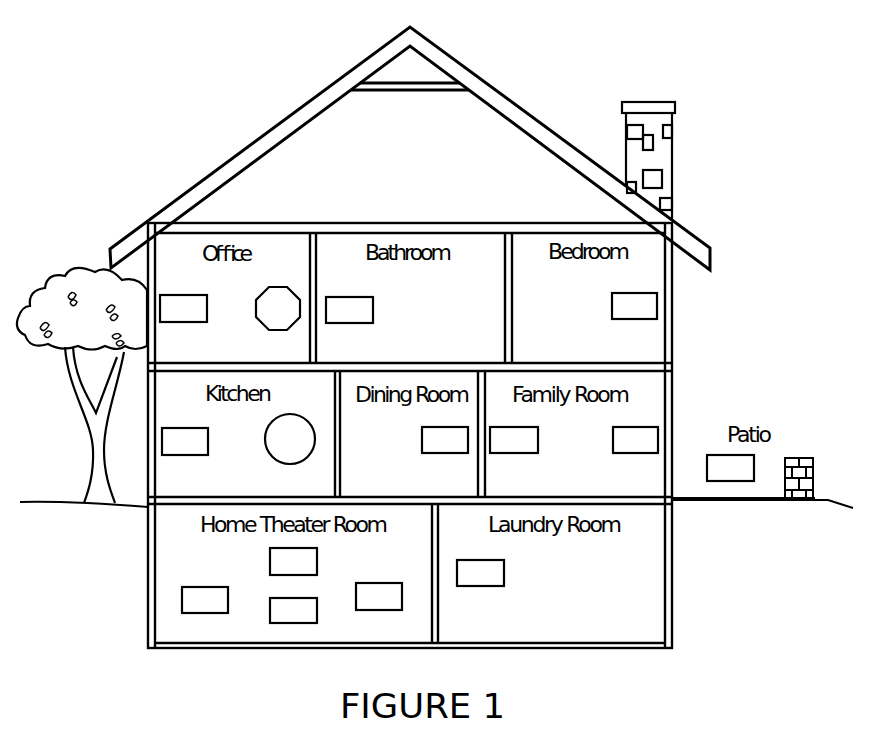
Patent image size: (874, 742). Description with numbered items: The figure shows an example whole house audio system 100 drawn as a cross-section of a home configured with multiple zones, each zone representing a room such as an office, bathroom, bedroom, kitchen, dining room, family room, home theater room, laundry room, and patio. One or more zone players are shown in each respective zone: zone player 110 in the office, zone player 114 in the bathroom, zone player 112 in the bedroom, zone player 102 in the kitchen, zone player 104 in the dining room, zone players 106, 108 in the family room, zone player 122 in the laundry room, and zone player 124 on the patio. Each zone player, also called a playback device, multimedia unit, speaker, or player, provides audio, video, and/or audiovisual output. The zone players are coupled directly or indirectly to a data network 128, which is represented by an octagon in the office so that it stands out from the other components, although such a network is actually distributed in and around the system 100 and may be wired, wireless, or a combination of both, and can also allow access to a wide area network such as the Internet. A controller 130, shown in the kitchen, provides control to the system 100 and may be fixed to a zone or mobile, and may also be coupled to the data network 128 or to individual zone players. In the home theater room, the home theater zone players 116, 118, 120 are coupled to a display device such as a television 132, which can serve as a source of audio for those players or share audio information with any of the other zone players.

The system 100 is at (178, 68).
The zone player 102 is at (185, 441).
The zone player 104 is at (445, 440).
The zone player 106 is at (514, 440).
The zone player 108 is at (635, 440).
The zone player 110 is at (183, 309).
The zone player 112 is at (634, 306).
The zone player 114 is at (349, 310).
The home theater zone player 116 is at (205, 600).
The home theater zone player 118 is at (379, 597).
The home theater zone player 120 is at (293, 611).
The zone player 122 is at (480, 573).
The zone player 124 is at (730, 468).
The data network 128 is at (278, 308).
The controller 130 is at (290, 439).
The television 132 is at (293, 562).